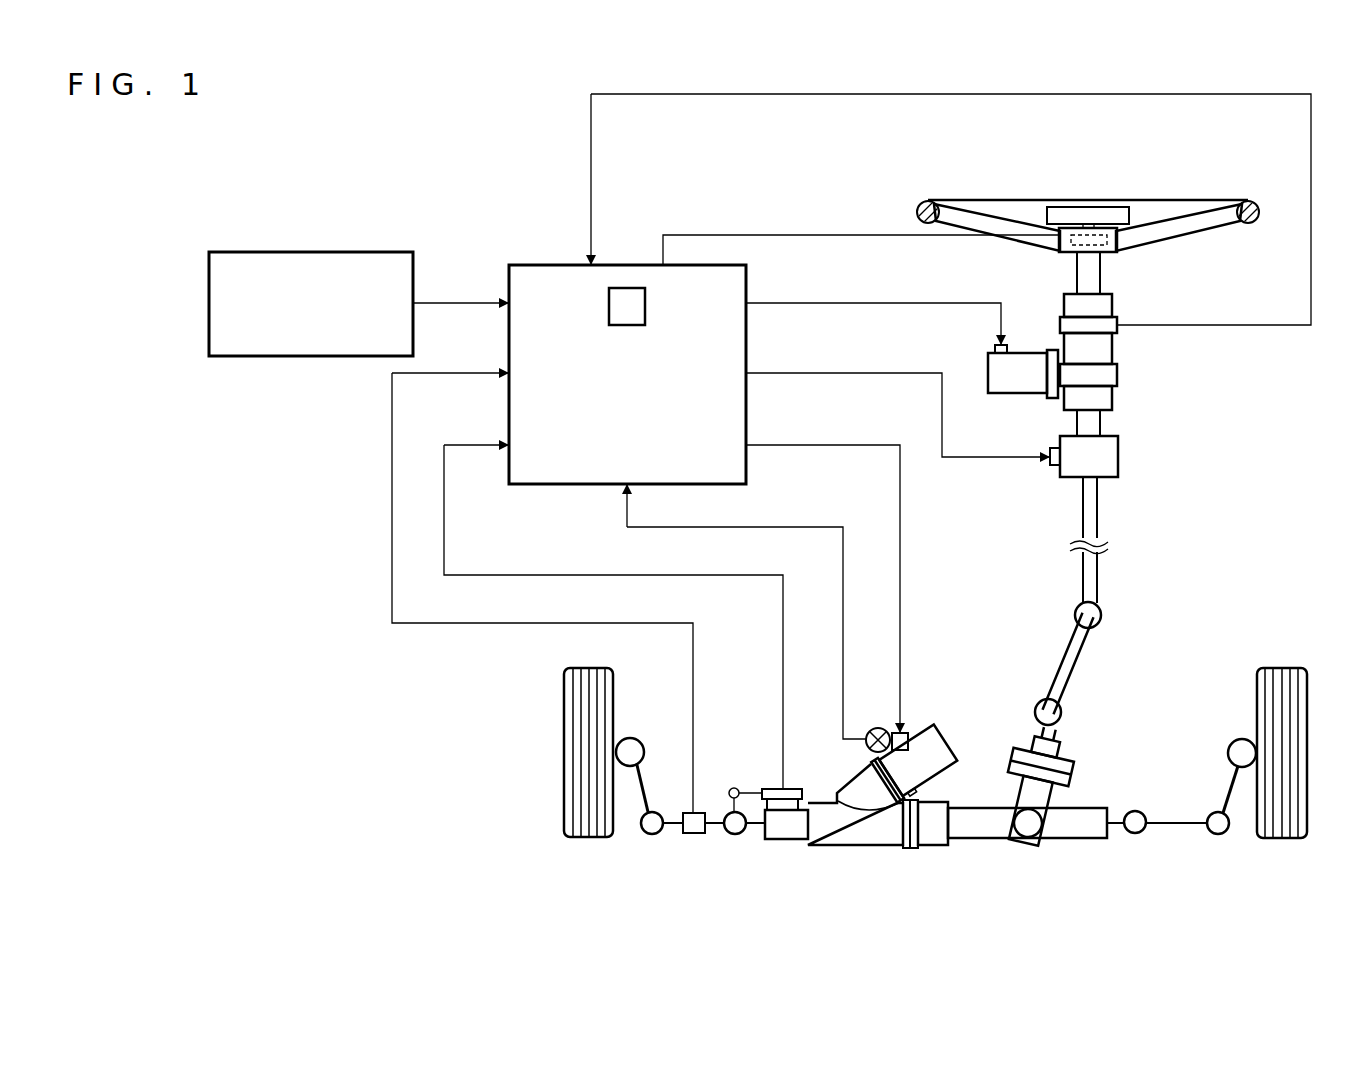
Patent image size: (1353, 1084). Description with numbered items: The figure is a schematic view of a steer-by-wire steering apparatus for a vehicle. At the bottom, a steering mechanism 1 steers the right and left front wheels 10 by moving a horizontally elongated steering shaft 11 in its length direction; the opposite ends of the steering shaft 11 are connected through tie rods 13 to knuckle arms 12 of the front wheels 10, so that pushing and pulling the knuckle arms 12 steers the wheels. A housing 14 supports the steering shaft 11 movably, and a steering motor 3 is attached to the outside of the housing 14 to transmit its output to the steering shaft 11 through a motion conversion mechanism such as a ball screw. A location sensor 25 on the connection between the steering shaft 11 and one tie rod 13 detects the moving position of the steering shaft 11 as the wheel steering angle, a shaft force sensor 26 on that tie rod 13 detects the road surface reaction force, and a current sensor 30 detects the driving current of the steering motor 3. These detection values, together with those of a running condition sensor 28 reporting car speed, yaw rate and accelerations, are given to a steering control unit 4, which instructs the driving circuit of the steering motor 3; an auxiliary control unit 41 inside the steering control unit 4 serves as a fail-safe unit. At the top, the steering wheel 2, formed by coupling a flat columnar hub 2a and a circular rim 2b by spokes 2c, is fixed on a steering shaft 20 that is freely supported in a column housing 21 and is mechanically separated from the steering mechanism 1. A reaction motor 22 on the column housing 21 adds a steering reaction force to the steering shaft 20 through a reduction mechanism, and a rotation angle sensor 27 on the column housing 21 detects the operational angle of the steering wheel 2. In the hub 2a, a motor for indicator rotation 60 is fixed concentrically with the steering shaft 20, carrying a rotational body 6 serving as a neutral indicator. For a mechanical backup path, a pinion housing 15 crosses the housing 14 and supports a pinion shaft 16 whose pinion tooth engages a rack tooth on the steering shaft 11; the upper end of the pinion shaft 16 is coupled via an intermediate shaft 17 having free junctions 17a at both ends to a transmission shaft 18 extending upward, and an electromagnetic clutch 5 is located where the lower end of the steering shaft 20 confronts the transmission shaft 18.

The steering mechanism 1 is at (937, 880).
The steering wheel 2 is at (1063, 205).
The hub 2a is at (1063, 250).
The rim 2b is at (1038, 205).
The spokes 2c is at (975, 200).
The steering motor 3 is at (925, 725).
The steering control unit 4 is at (552, 262).
The electromagnetic clutch 5 is at (1112, 455).
The rotational body (neutral indicator) 6 is at (1097, 205).
The front wheels 10 is at (583, 840).
The steering shaft 11 is at (758, 832).
The knuckle arms 12 is at (640, 790).
The tie rods 13 is at (676, 835).
The housing 14 is at (870, 847).
The pinion housing 15 is at (1062, 822).
The pinion shaft 16 is at (1060, 732).
The intermediate shaft 17 is at (1082, 657).
The free junctions 17a is at (1102, 612).
The transmission shaft 18 is at (1093, 505).
The steering shaft 20 is at (1105, 280).
The column housing 21 is at (1112, 398).
The reaction motor 22 is at (1012, 385).
The location sensor 25 is at (768, 788).
The shaft force sensor 26 is at (688, 812).
The rotation angle sensor 27 is at (1117, 330).
The running condition sensor 28 is at (380, 252).
The current sensor 30 is at (866, 745).
The control unit 41 is at (626, 288).
The motor for indicator rotation 60 is at (1105, 250).